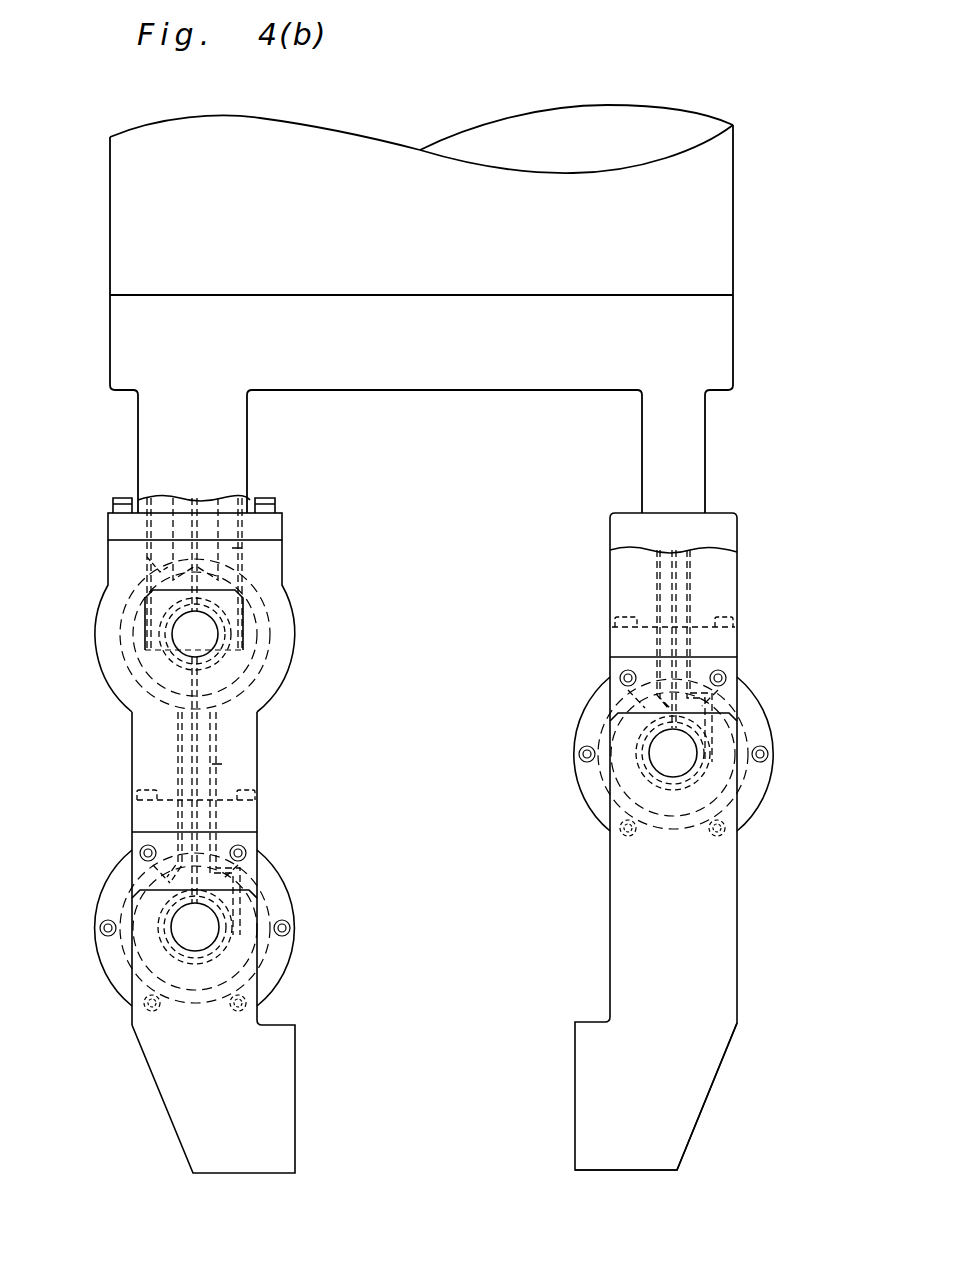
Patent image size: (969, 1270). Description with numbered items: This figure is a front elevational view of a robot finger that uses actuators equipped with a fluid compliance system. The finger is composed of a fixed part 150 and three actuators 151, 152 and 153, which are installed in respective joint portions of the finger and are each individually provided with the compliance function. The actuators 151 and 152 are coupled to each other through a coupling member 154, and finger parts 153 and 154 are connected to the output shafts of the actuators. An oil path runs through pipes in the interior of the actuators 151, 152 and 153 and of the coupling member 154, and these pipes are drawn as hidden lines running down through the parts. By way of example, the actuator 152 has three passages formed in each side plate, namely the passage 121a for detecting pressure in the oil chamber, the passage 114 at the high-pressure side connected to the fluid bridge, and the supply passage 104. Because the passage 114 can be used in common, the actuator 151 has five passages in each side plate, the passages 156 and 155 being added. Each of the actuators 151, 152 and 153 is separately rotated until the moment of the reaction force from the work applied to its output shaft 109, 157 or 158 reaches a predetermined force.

The fixed part 150 is at (478, 372).
The actuator 151 is at (302, 663).
The actuator 152 is at (303, 940).
The actuator 153 is at (275, 1122).
The coupling member 154 is at (680, 1112).
The passage 155 is at (170, 513).
The passage 156 is at (180, 508).
The output shaft 157 is at (210, 630).
The output shaft 158 is at (680, 745).
The output shaft 109 is at (203, 937).
The supply passage 104 is at (147, 557).
The passage 114 is at (232, 497).
The detecting means 121a is at (242, 548).